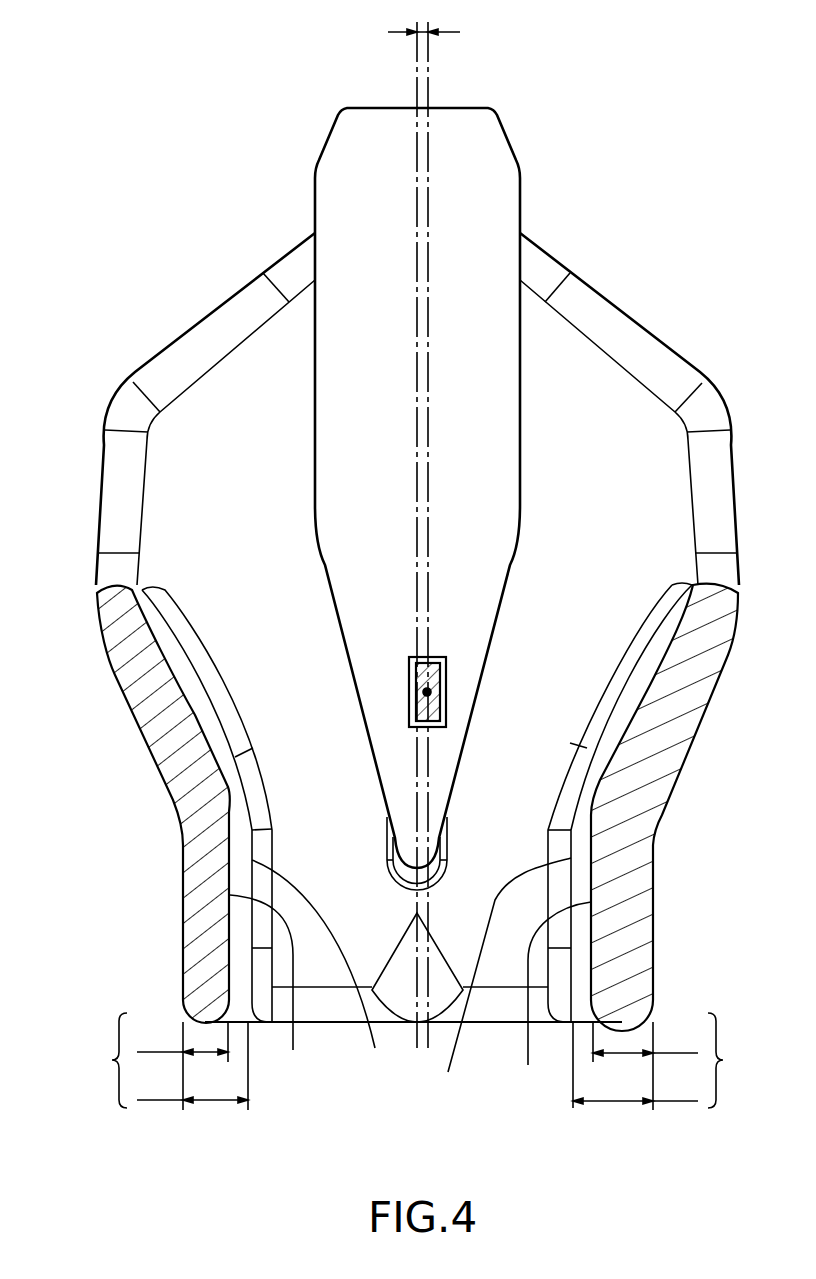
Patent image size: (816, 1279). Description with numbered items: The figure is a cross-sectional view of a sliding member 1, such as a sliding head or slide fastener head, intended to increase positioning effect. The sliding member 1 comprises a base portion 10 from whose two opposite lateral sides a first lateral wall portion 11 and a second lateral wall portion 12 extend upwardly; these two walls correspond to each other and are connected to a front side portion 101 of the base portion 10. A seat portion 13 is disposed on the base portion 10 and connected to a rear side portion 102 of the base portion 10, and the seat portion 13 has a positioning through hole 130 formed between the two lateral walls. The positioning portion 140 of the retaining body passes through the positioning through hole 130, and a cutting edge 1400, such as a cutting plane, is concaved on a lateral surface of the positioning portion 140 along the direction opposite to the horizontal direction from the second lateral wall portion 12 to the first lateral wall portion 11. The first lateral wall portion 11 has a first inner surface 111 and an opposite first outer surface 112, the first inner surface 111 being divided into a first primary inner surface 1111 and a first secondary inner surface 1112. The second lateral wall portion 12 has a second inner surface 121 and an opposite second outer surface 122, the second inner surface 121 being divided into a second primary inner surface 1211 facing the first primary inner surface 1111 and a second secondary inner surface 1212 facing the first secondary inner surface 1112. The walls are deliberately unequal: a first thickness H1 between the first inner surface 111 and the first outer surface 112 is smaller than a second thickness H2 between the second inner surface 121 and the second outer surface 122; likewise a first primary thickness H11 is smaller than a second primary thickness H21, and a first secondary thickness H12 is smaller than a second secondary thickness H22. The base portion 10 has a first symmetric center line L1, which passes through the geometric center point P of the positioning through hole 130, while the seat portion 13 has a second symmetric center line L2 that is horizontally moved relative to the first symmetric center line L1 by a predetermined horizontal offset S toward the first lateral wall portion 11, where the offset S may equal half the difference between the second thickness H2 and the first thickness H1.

The sliding member 1 is at (722, 66).
The base portion 10 is at (427, 607).
The first lateral wall portion 11 is at (161, 848).
The second lateral wall portion 12 is at (669, 847).
The seat portion 13 is at (485, 370).
The front side portion 101 is at (547, 1007).
The rear side portion 102 is at (290, 270).
The first inner surface 111 is at (277, 856).
The first primary inner surface 1111 is at (330, 971).
The first secondary inner surface 1112 is at (277, 988).
The first outer surface 112 is at (183, 927).
The second inner surface 121 is at (553, 862).
The second primary inner surface 1211 is at (495, 979).
The second secondary inner surface 1212 is at (547, 1001).
The second outer surface 122 is at (653, 927).
The positioning through hole 130 is at (446, 657).
The positioning portion 140 is at (440, 676).
The cutting edge 1400 is at (416, 700).
The geometric center point P is at (430, 694).
The predetermined horizontal offset S is at (424, 19).
The first symmetric center line L1 is at (428, 92).
The second symmetric center line L2 is at (417, 92).
The first thickness H1 is at (97, 1060).
The first primary thickness H11 is at (186, 1088).
The first secondary thickness H12 is at (176, 1038).
The second thickness H2 is at (737, 1060).
The second primary thickness H21 is at (642, 1088).
The second secondary thickness H22 is at (652, 1039).